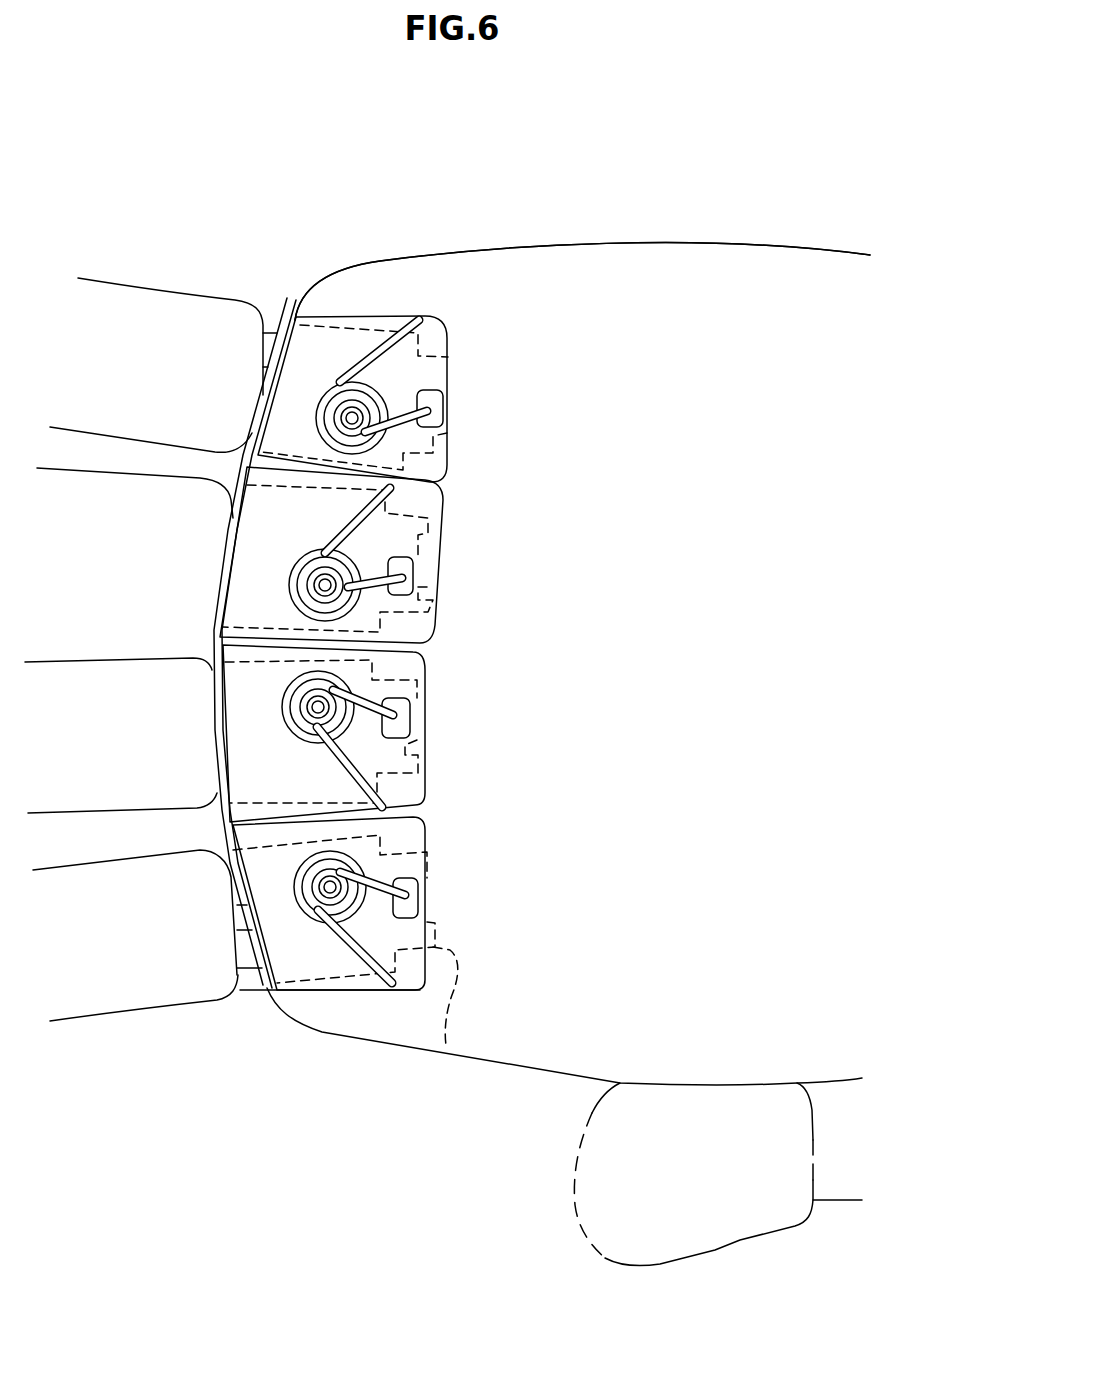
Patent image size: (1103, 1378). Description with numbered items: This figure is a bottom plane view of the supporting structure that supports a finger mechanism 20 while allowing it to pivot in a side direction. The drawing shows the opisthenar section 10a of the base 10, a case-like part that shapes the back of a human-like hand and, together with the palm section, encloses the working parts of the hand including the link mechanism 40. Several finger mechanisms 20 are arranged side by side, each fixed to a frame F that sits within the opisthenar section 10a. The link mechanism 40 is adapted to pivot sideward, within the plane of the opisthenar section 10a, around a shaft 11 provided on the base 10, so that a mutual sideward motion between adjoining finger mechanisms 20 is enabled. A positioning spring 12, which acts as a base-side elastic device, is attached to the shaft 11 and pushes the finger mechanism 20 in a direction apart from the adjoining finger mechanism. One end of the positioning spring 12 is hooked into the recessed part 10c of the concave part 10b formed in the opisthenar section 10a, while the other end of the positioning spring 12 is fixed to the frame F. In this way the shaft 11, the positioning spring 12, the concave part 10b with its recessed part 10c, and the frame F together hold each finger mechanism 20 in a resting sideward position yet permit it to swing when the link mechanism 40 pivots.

The base 10 is at (497, 250).
The opisthenar section 10a is at (582, 281).
The concave part 10b is at (307, 963).
The recessed part 10c is at (407, 983).
The shaft 11 is at (303, 896).
The positioning spring 12 is at (357, 963).
The finger mechanism 20 is at (128, 1014).
The link mechanism 40 is at (247, 932).
The frame F is at (446, 1045).